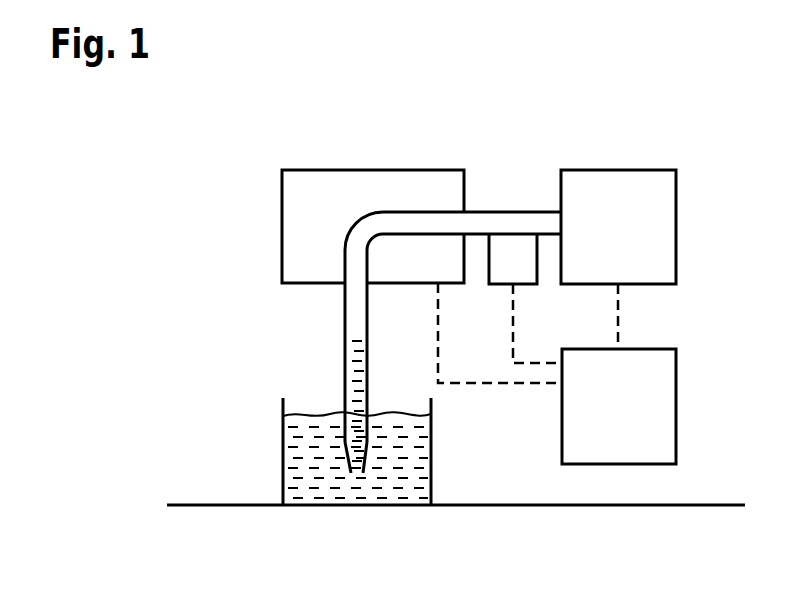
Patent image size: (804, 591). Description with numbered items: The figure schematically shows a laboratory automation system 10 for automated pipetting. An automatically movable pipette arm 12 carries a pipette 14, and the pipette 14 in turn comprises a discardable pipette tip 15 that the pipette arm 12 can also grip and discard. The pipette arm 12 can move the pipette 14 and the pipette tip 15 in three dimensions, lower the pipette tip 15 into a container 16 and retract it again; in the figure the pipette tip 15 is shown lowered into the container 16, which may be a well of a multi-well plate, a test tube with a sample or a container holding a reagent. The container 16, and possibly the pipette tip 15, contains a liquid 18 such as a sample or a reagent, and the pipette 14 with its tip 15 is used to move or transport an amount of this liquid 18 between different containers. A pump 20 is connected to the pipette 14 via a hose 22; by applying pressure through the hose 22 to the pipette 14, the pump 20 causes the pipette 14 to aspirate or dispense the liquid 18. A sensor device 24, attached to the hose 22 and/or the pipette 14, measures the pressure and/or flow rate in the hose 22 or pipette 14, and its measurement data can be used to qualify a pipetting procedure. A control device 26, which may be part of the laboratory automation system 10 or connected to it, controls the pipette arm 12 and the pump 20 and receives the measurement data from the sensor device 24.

The laboratory automation system 10 is at (678, 110).
The pipette arm 12 is at (282, 190).
The pipette 14 is at (345, 312).
The pipette tip 15 is at (345, 364).
The container 16 is at (283, 443).
The liquid 18 is at (305, 487).
The pump 20 is at (676, 228).
The hose 22 is at (512, 212).
The sensor device 24 is at (523, 284).
The control device 26 is at (676, 408).